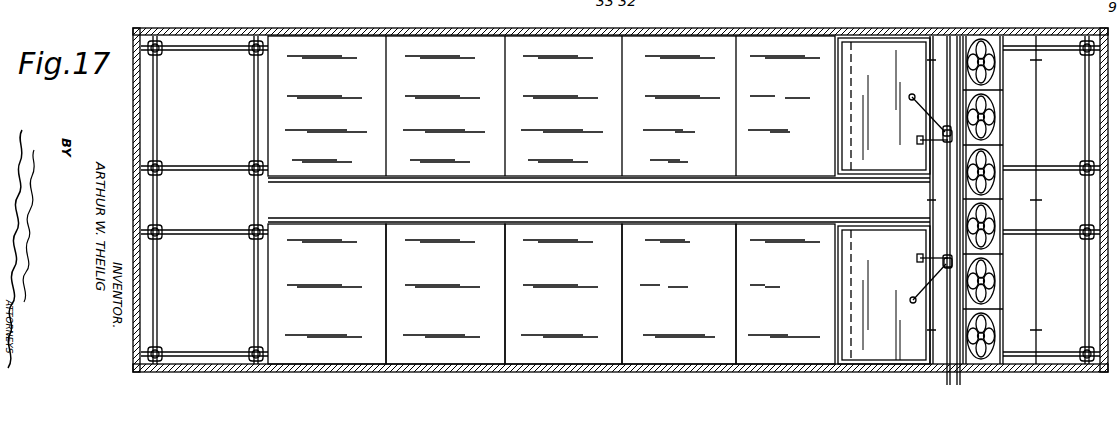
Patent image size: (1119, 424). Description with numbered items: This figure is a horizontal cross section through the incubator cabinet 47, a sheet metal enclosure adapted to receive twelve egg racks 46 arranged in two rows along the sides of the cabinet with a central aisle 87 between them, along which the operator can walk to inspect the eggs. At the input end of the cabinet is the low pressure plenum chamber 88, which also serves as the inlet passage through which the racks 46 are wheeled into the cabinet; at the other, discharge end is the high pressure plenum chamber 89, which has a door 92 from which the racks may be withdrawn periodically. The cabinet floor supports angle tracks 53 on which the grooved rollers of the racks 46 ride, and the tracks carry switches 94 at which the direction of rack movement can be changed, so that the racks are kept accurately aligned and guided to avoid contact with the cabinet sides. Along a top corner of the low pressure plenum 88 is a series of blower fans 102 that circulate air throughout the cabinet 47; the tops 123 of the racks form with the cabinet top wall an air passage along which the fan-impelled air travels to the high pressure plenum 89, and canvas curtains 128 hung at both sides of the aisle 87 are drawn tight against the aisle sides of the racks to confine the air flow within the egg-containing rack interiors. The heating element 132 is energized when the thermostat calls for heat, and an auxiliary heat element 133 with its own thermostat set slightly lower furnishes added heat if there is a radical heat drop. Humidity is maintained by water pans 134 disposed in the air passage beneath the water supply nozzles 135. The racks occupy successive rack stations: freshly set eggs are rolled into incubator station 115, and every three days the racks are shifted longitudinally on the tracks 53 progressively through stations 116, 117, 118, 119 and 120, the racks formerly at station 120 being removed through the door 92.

The egg rack 46 is at (756, 51).
The incubator cabinet 47 is at (800, 10).
The angle tracks 53 is at (158, 98).
The central aisle 87 is at (599, 205).
The low pressure plenum chamber 88 is at (1051, 200).
The high pressure plenum chamber 89 is at (615, 200).
The door 92 is at (213, 372).
The switches 94 is at (253, 53).
The blower fans 102 is at (988, 178).
The incubator station 115 is at (858, 216).
The rack station 116 is at (785, 309).
The rack station 117 is at (679, 309).
The rack station 118 is at (563, 309).
The rack station 119 is at (445, 309).
The rack station 120 is at (327, 309).
The top wall of rack 123 is at (704, 238).
The canvas curtains 128 is at (462, 180).
The heating element 132 is at (1038, 80).
The auxiliary heat element 133 is at (920, 78).
The water pans 134 is at (838, 125).
The water supply nozzles 135 is at (920, 140).